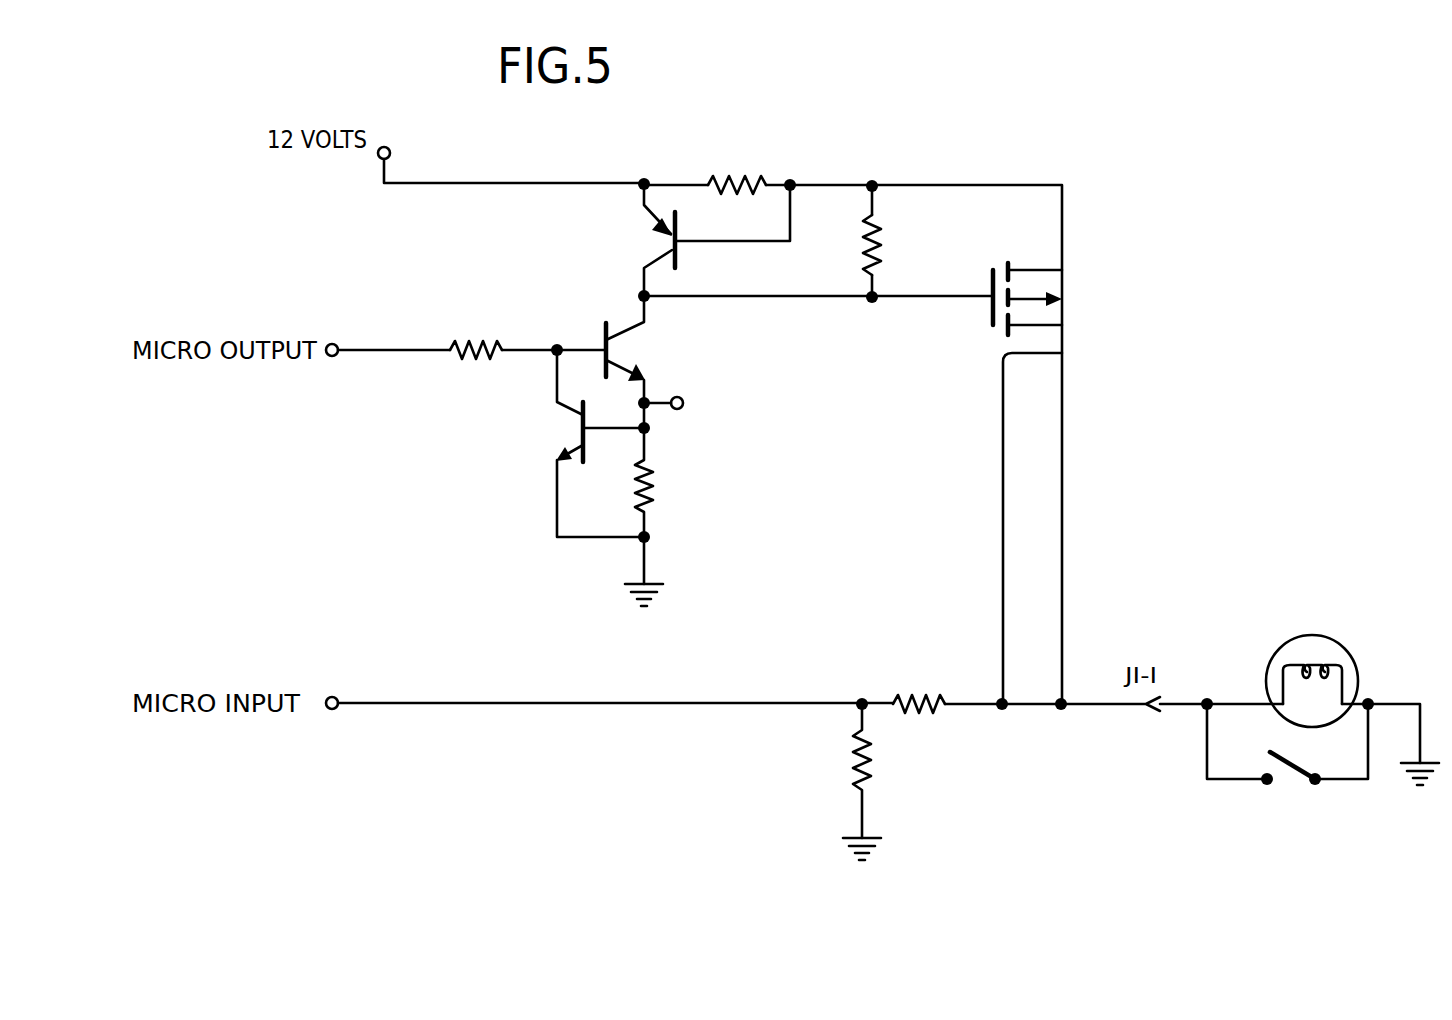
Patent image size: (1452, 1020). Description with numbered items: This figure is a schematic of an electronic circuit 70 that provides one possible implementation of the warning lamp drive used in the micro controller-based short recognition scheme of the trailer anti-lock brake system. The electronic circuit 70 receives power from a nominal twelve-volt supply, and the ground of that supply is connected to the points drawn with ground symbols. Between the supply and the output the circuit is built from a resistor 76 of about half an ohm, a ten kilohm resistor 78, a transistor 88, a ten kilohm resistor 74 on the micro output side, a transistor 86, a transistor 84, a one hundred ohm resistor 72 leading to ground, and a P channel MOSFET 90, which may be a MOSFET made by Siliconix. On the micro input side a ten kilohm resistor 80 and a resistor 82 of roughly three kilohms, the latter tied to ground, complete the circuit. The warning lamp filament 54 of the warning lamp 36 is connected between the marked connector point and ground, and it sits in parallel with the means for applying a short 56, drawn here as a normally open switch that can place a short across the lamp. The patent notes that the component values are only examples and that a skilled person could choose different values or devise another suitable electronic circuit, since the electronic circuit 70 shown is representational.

The electronic circuit 70 is at (1097, 214).
The resistor 76 is at (739, 174).
The resistor 78 is at (884, 240).
The transistor 88 is at (657, 236).
The resistor 74 is at (480, 335).
The transistor 86 is at (640, 350).
The transistor 84 is at (557, 429).
The resistor 72 is at (657, 468).
The MOSFET 90 is at (1076, 313).
The resistor 80 is at (926, 713).
The resistor 82 is at (842, 756).
The warning lamp 36 is at (1303, 634).
The warning lamp filament 54 is at (1345, 666).
The means for applying a short 56 is at (1292, 782).